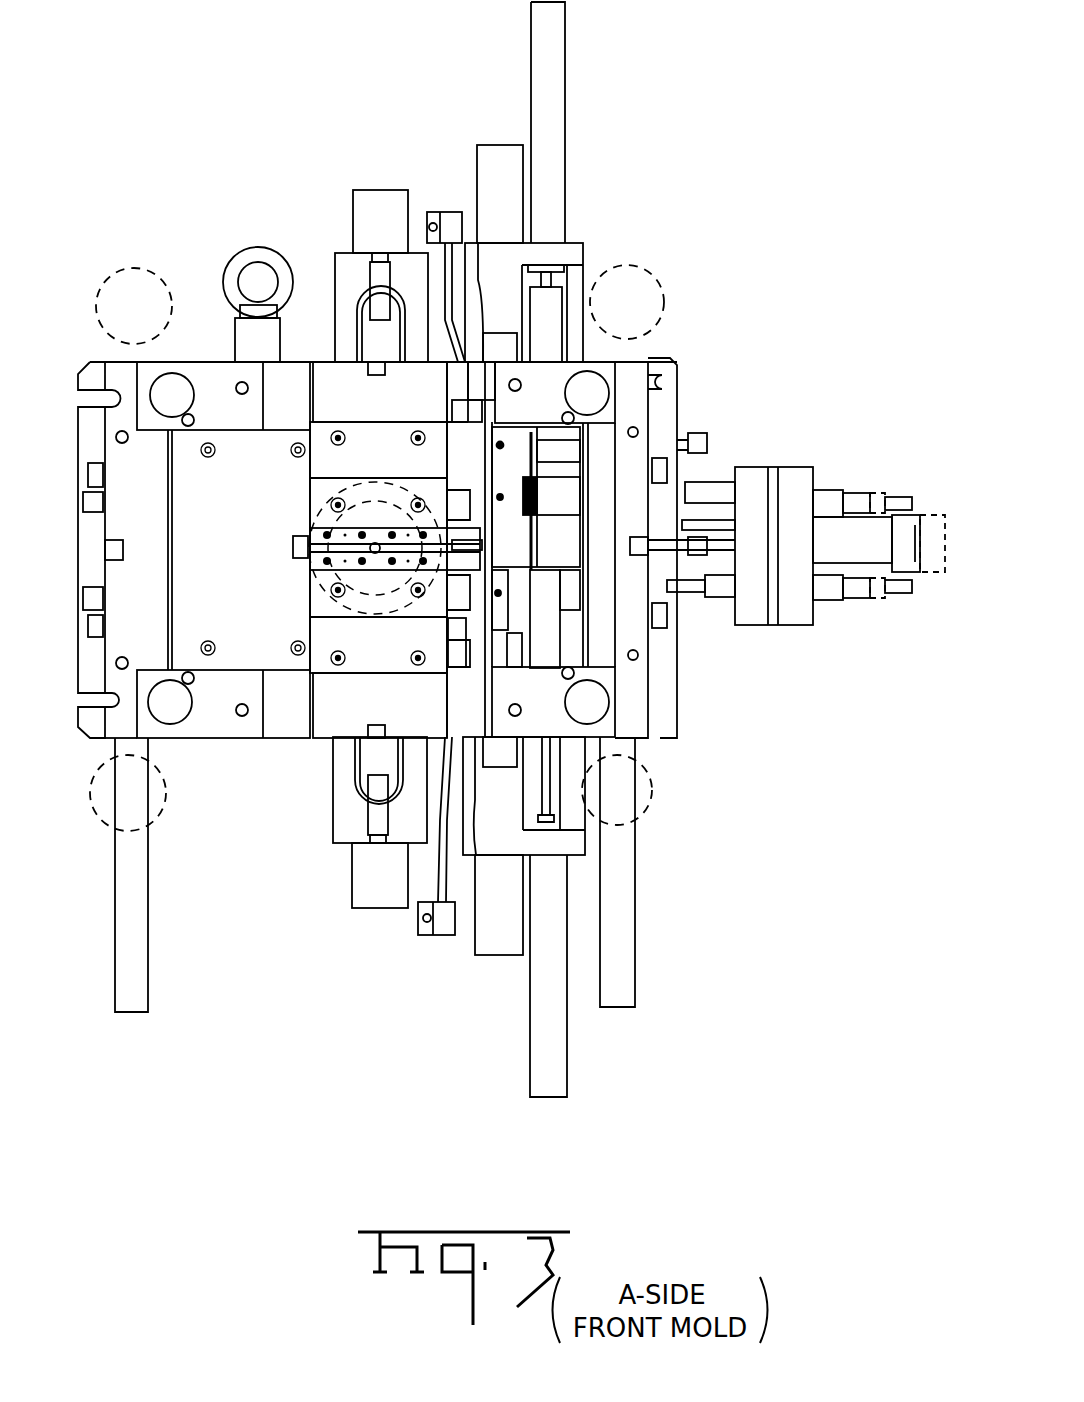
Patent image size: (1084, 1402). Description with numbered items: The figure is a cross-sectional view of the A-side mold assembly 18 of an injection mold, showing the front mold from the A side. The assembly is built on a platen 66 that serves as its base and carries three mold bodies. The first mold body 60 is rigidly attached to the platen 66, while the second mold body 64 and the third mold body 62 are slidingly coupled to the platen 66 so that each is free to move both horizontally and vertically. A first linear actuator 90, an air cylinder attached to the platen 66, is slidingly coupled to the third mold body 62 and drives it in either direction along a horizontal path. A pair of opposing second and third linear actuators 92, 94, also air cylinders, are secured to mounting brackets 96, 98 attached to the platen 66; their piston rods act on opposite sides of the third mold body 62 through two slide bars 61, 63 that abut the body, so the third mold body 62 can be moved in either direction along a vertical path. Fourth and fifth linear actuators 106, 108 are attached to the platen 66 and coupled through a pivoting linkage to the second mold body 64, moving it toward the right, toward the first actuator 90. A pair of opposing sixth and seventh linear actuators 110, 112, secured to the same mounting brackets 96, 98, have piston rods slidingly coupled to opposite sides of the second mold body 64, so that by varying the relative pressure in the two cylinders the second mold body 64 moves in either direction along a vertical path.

The A-side mold assembly 18 is at (812, 268).
The first mold body 60 is at (310, 598).
The slide bar 61 is at (548, 603).
The third mold body 62 is at (520, 445).
The slide bar 63 is at (593, 310).
The second mold body 64 is at (472, 595).
The platen 66 is at (87, 665).
The first linear actuator 90 is at (877, 545).
The second linear actuator 92 is at (547, 1028).
The third linear actuator 94 is at (565, 42).
The mounting bracket 96 is at (563, 845).
The mounting bracket 98 is at (577, 258).
The fourth linear actuator 106 is at (383, 897).
The fifth linear actuator 108 is at (374, 200).
The sixth linear actuator 110 is at (492, 933).
The seventh linear actuator 112 is at (497, 150).